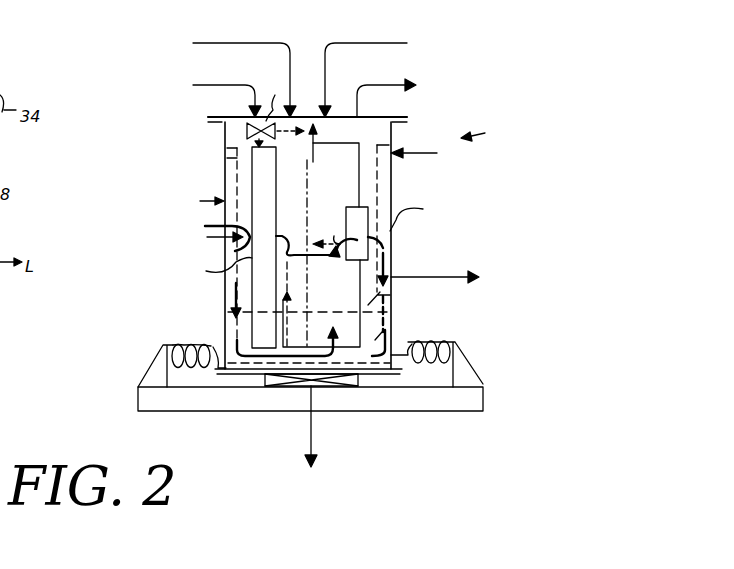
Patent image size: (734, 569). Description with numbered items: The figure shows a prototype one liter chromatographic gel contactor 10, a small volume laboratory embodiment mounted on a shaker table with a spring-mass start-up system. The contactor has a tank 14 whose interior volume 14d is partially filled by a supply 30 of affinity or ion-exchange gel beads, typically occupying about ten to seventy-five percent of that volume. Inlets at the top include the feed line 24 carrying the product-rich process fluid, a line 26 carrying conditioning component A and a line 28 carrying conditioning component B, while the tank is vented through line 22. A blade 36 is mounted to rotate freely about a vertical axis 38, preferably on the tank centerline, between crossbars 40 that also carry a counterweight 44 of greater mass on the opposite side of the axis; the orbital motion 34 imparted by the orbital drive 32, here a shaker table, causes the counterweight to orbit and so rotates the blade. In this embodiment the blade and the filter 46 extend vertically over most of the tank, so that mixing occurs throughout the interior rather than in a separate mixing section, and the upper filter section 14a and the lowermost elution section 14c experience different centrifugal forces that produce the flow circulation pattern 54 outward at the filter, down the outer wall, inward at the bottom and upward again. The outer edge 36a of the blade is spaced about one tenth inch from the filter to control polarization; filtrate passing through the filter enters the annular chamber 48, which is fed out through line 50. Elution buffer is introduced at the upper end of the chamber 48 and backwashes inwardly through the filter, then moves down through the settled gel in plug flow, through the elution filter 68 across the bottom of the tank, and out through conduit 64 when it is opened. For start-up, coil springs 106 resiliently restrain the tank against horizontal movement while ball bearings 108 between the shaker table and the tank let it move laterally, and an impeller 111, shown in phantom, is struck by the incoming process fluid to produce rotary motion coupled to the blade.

The gel contactor 10 is at (489, 138).
The tank 14 is at (400, 128).
The filter section 14a is at (193, 201).
The elution section 14c is at (220, 350).
The interior volume 14d is at (426, 216).
The vent line 22 is at (367, 81).
The process fluid feed line 24 is at (236, 81).
The conditioning component A line 26 is at (353, 34).
The conditioning component B line 28 is at (222, 34).
The supply of gel beads 30 is at (392, 298).
The orbital drive 32 is at (423, 411).
The orbital motion 34 is at (323, 254).
The blade 36 is at (268, 190).
The outer edge of the blade 36a is at (210, 271).
The vertical axis 38 is at (318, 141).
The crossbars 40 is at (336, 146).
The counterweight 44 is at (346, 226).
The filter 46 is at (224, 157).
The annular chamber 48 is at (383, 173).
The filtrate line 50 is at (393, 272).
The flow circulation pattern 54 is at (253, 235).
The elution conduit 64 is at (310, 427).
The elution filter 68 is at (393, 327).
The coil springs 106 is at (183, 340).
The ball bearings 108 is at (265, 378).
The impeller 111 is at (288, 75).